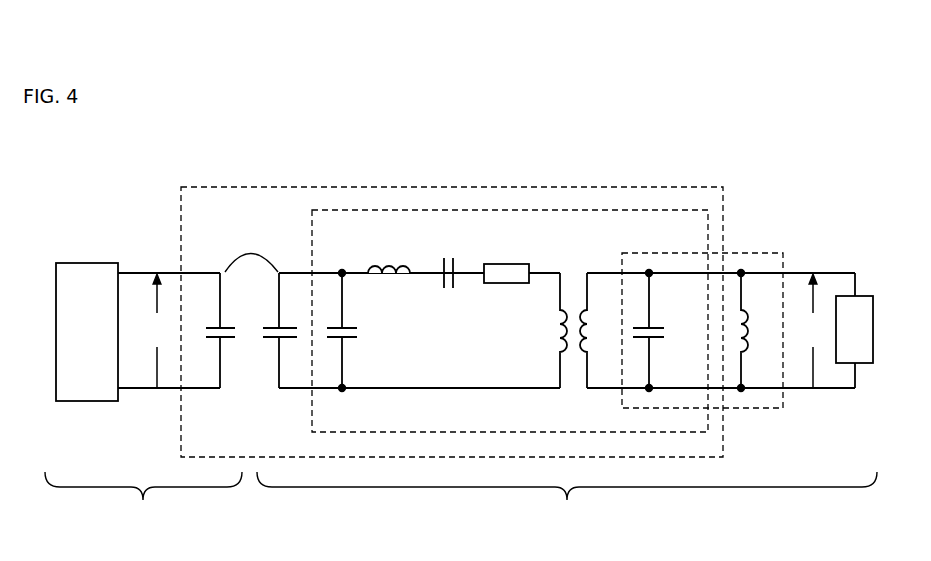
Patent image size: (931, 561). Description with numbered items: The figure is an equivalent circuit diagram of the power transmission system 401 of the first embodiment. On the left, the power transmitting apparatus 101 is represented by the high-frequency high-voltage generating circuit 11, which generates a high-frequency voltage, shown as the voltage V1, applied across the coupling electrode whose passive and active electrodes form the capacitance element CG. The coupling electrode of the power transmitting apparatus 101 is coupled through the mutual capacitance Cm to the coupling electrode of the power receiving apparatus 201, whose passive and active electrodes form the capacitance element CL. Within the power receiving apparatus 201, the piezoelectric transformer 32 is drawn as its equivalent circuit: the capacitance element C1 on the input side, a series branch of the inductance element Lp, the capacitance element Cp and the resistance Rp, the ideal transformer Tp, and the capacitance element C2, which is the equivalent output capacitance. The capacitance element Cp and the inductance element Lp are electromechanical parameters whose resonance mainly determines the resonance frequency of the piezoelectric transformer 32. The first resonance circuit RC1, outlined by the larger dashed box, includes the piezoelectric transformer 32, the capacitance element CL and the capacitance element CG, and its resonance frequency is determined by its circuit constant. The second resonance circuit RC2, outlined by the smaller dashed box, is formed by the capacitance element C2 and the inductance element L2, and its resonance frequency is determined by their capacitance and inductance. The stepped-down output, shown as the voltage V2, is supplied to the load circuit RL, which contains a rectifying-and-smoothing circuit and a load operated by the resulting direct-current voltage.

The high-frequency high-voltage generating circuit 11 is at (87, 262).
The piezoelectric transformer 32 is at (527, 210).
The power transmission system 401 is at (802, 136).
The power transmitting apparatus 101 is at (143, 503).
The power receiving apparatus 201 is at (567, 502).
The first resonance circuit RC1 is at (265, 188).
The second resonance circuit RC2 is at (783, 253).
The mutual capacitance Cm is at (251, 249).
The capacitance element CG is at (211, 330).
The capacitance element CL is at (273, 330).
The capacitance element C1 is at (358, 331).
The inductance element Lp is at (389, 255).
The capacitance element Cp is at (449, 259).
The resistance Rp is at (506, 260).
The ideal transformer Tp is at (573, 277).
The capacitance element C2 is at (665, 331).
The inductance element L2 is at (758, 331).
The voltage V1 is at (157, 331).
The voltage V2 is at (812, 331).
The load circuit RL is at (870, 295).